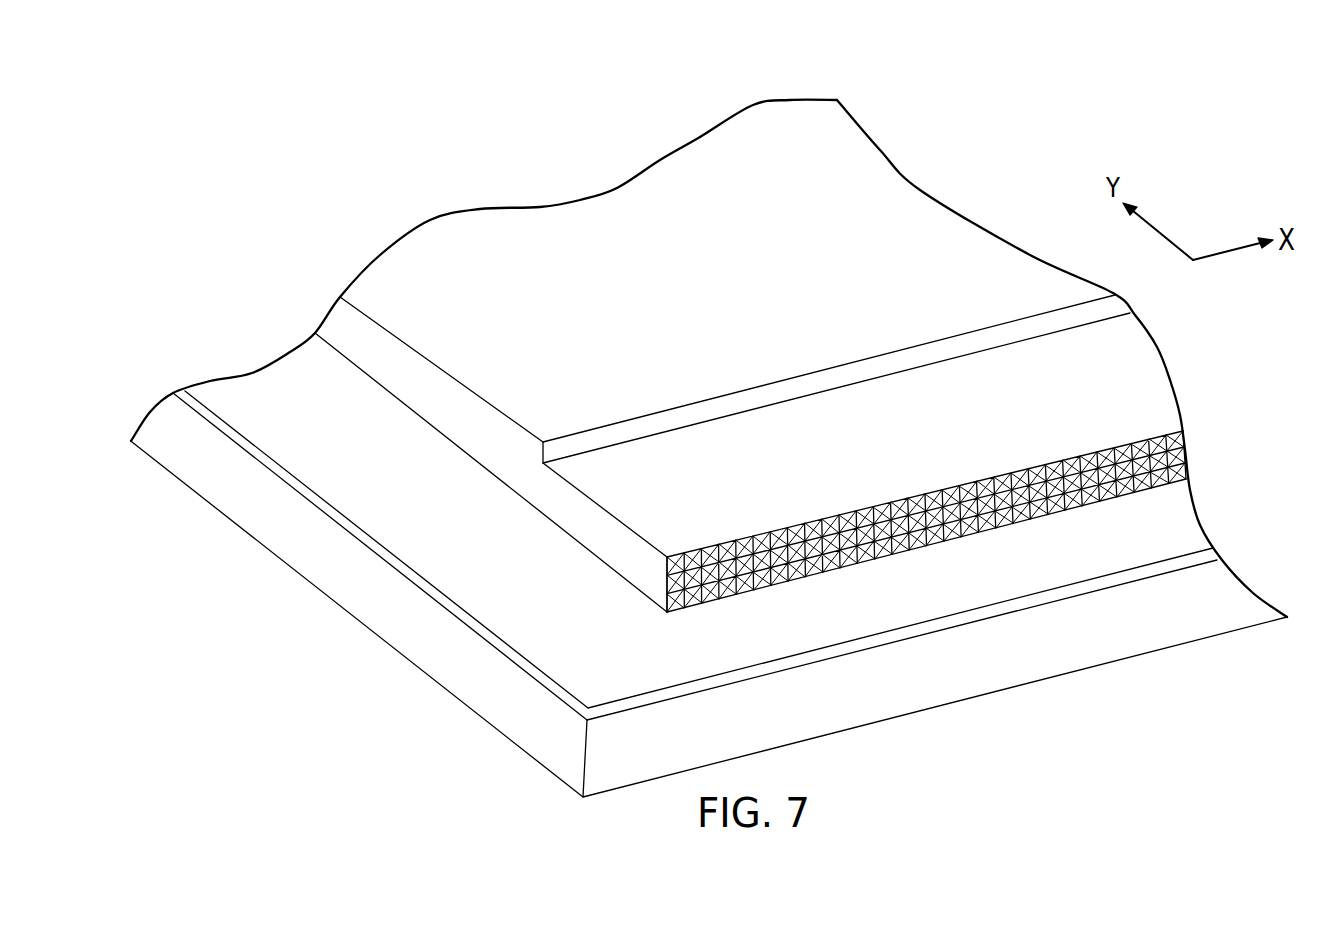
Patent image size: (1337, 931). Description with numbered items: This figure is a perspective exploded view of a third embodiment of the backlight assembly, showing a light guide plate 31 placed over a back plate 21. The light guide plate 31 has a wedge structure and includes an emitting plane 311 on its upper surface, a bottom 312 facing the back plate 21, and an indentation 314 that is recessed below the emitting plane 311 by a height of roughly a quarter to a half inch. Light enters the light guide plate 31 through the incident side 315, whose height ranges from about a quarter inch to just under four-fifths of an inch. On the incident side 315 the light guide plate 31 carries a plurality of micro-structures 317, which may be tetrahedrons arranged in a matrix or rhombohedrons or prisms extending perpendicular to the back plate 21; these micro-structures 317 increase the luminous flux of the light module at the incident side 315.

The back plate 21 is at (1142, 618).
The light guide plate 31 is at (1002, 112).
The emitting plane 311 is at (625, 243).
The bottom 312 is at (477, 463).
The indentation 314 is at (1123, 380).
The incident side 315 is at (990, 527).
The micro-structures 317 is at (720, 592).